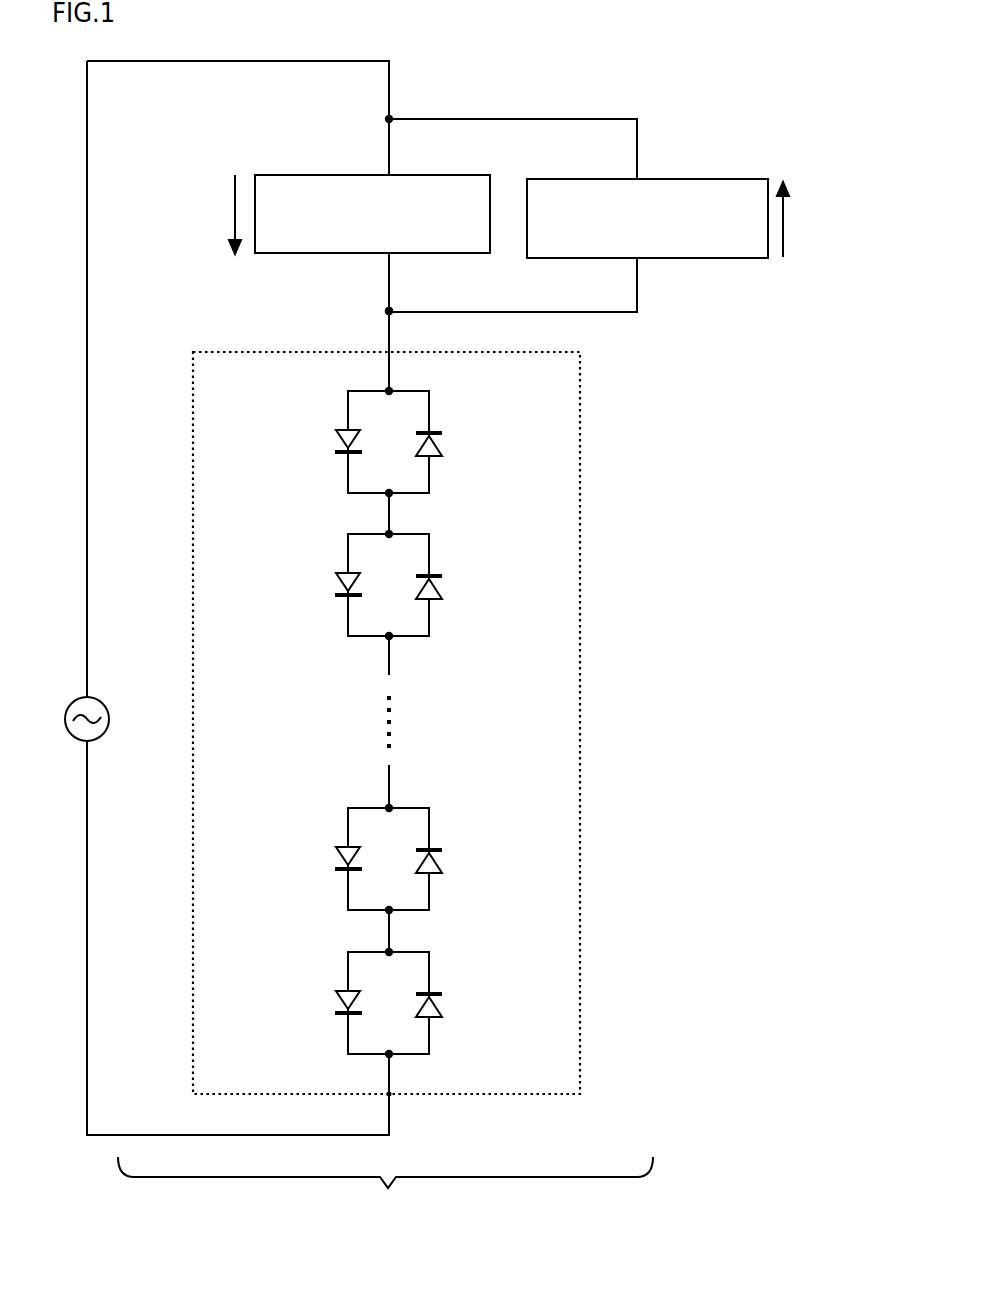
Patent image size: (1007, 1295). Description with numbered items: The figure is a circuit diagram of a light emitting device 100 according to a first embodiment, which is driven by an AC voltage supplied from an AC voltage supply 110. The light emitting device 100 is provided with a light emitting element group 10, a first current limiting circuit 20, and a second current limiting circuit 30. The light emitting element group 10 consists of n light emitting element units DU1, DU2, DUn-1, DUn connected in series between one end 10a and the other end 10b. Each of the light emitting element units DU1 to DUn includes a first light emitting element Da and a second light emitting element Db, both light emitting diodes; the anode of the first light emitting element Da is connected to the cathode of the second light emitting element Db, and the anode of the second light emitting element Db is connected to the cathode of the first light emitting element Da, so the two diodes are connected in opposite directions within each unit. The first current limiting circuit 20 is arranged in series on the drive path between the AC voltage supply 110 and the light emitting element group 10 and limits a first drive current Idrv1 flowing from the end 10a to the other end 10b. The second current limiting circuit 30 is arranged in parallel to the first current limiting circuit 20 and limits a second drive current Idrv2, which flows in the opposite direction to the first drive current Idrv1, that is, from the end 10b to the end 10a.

The light emitting device 100 is at (409, 1220).
The light emitting element group 10 is at (581, 724).
The one end of the light emitting element group 10a is at (378, 352).
The other end of the light emitting element group 10b is at (390, 1098).
The first current limiting circuit 20 is at (354, 175).
The second current limiting circuit 30 is at (672, 258).
The AC voltage supply 110 is at (100, 699).
The first light emitting element Da is at (336, 439).
The second light emitting element Db is at (418, 441).
The light emitting element unit DU1 is at (453, 385).
The light emitting element unit DU2 is at (453, 528).
The light emitting element unit DUn-1 is at (453, 802).
The light emitting element unit DUn is at (453, 946).
The first drive current Idrv1 is at (202, 214).
The second drive current Idrv2 is at (817, 219).